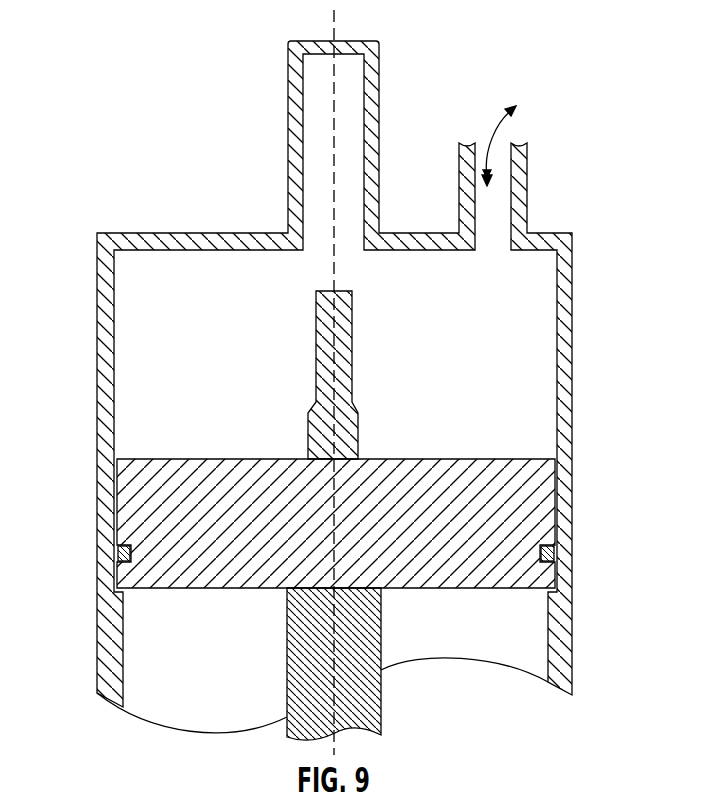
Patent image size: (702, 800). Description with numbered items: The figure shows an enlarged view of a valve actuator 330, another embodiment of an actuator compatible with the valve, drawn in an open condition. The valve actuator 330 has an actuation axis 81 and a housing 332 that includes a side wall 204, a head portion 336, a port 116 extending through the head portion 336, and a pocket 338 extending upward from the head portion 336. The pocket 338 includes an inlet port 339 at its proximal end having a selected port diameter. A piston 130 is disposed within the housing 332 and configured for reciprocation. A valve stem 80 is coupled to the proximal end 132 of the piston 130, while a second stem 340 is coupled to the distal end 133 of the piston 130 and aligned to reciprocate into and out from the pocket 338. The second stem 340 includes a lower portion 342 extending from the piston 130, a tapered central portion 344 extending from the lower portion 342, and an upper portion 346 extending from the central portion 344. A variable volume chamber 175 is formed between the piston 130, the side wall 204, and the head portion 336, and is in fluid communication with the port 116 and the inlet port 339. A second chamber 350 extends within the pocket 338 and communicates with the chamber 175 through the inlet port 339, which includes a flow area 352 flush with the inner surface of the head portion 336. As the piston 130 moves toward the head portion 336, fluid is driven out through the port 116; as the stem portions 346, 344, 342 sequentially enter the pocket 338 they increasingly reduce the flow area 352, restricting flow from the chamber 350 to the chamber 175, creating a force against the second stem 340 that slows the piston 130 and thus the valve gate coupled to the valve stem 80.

The valve actuator 330 is at (121, 45).
The housing 332 is at (100, 285).
The side wall 204 is at (103, 330).
The variable volume chamber 175 is at (127, 357).
The head portion 336 is at (163, 233).
The pocket 338 is at (297, 91).
The second chamber 350 is at (360, 74).
The inlet port 339 is at (358, 237).
The flow area 352 is at (334, 251).
The port 116 is at (518, 218).
The piston 130 is at (118, 492).
The actuation axis 81 is at (336, 536).
The distal end 133 is at (248, 458).
The proximal end 132 is at (197, 566).
The second stem 340 is at (323, 313).
The upper portion 346 is at (336, 350).
The tapered central portion 344 is at (355, 407).
The lower portion 342 is at (353, 455).
The valve stem 80 is at (365, 715).